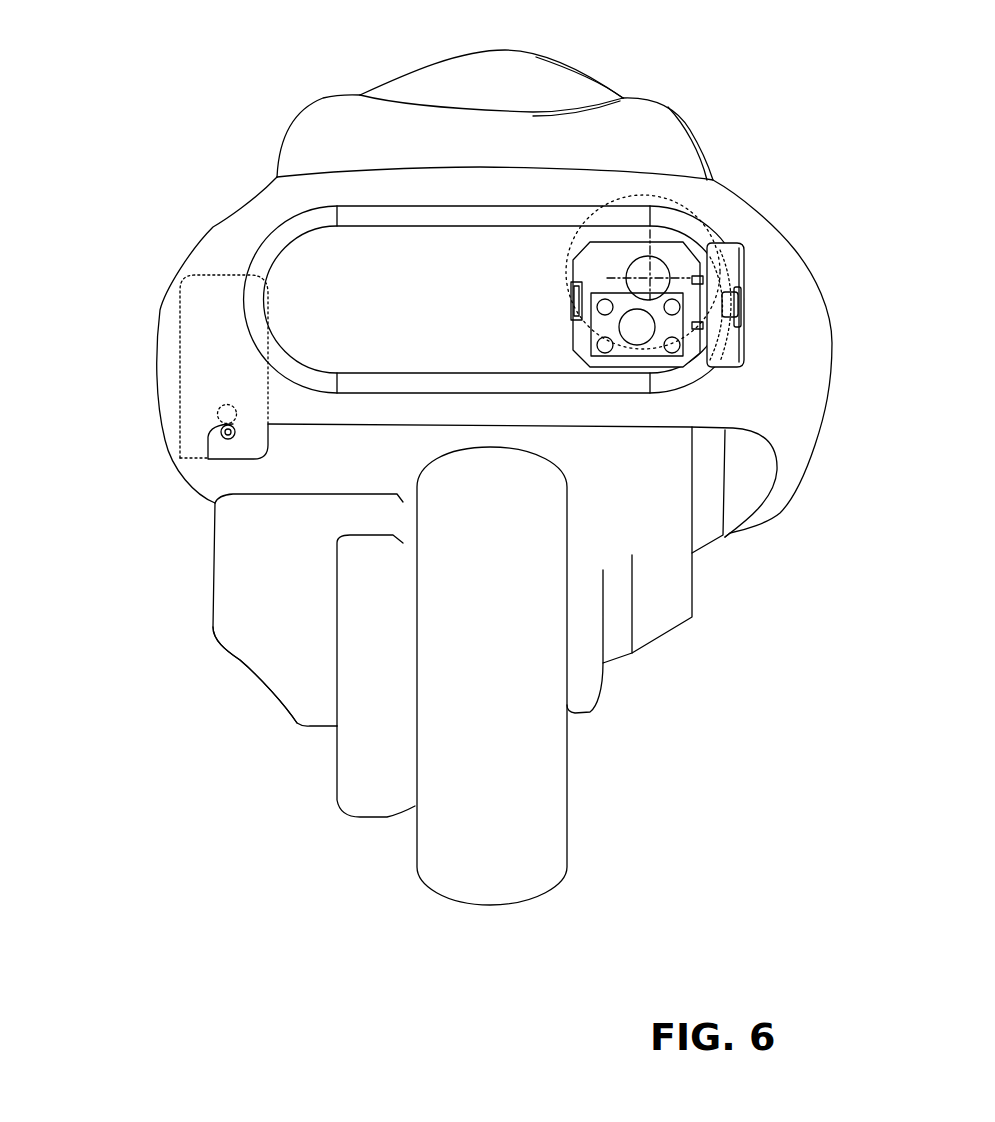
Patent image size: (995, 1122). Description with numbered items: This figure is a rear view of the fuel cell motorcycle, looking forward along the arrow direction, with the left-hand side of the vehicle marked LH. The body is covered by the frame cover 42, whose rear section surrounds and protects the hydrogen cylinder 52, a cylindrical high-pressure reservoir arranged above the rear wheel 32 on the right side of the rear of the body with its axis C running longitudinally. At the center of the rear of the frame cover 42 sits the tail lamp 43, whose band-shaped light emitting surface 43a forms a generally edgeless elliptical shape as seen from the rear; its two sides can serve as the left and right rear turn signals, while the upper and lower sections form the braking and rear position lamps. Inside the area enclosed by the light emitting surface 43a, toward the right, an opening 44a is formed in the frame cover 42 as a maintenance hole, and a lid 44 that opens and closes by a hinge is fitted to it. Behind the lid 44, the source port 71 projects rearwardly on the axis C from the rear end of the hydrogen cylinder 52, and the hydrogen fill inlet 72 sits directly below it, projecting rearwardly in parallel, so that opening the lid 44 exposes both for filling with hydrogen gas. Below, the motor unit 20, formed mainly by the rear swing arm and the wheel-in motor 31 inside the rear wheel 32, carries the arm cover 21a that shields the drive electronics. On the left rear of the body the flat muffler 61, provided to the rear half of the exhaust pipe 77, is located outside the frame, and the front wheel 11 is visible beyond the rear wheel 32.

The front wheel 11 is at (640, 137).
The motor unit 20 is at (185, 605).
The arm cover 21a is at (262, 672).
The motor 31 is at (353, 777).
The rear wheel 32 is at (558, 827).
The frame cover 42 is at (782, 232).
The tail lamp 43 is at (446, 254).
The light emitting surface 43a is at (254, 257).
The lid 44 is at (748, 360).
The opening 44a is at (580, 344).
The hydrogen cylinder 52 is at (670, 192).
The muffler 61 is at (148, 367).
The exhaust pipe 77 is at (193, 330).
The source port 71 is at (627, 274).
The hydrogen fill inlet 72 is at (620, 327).
The axis C is at (622, 264).
The left-hand direction LH is at (187, 817).